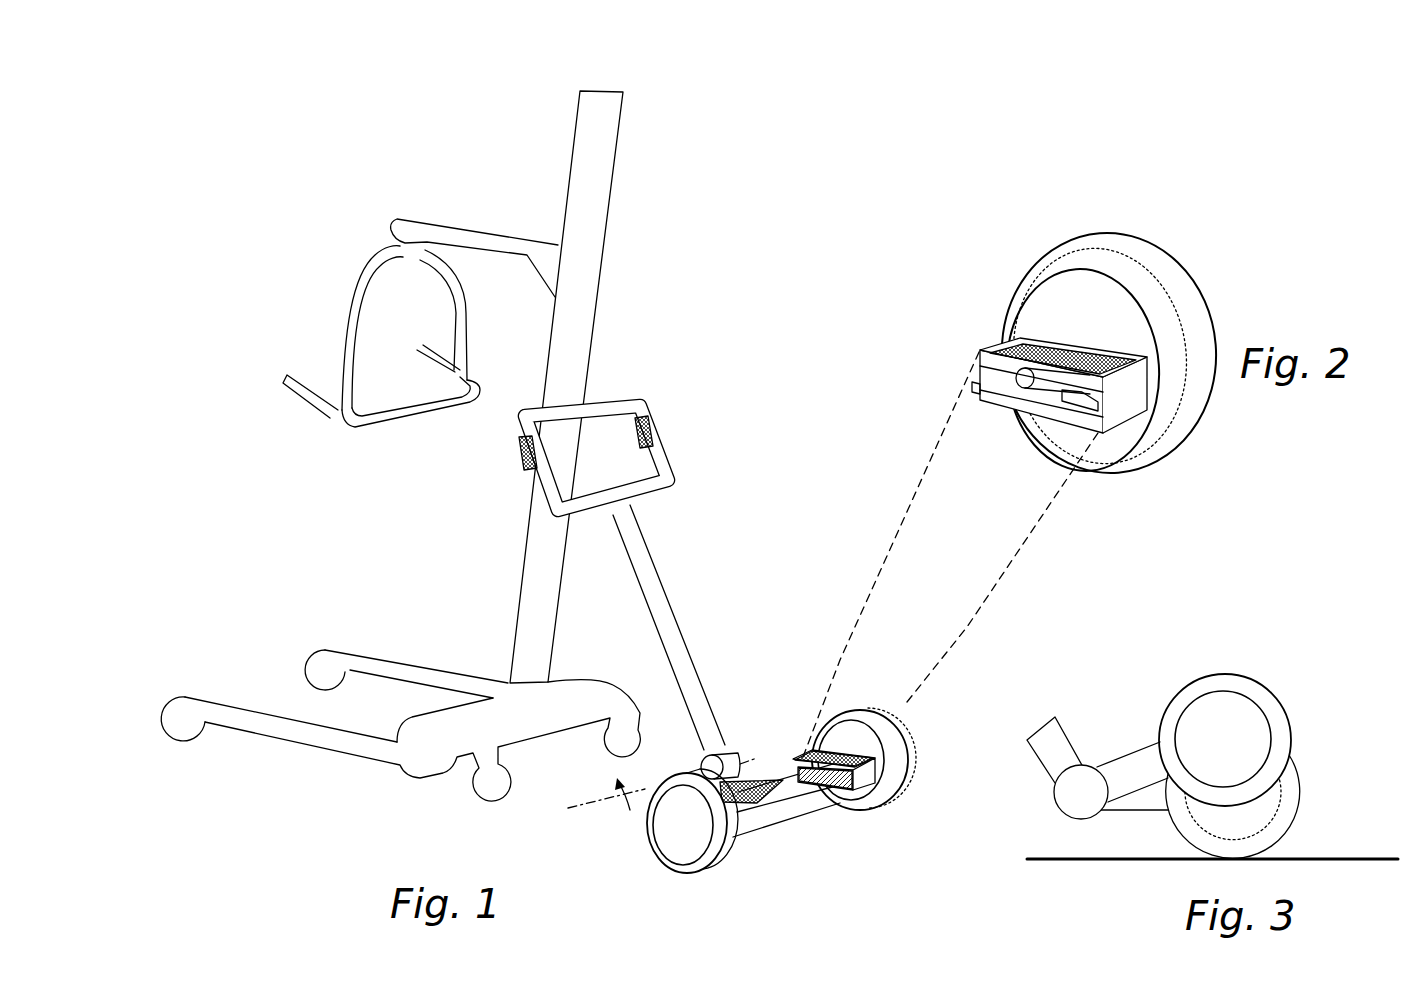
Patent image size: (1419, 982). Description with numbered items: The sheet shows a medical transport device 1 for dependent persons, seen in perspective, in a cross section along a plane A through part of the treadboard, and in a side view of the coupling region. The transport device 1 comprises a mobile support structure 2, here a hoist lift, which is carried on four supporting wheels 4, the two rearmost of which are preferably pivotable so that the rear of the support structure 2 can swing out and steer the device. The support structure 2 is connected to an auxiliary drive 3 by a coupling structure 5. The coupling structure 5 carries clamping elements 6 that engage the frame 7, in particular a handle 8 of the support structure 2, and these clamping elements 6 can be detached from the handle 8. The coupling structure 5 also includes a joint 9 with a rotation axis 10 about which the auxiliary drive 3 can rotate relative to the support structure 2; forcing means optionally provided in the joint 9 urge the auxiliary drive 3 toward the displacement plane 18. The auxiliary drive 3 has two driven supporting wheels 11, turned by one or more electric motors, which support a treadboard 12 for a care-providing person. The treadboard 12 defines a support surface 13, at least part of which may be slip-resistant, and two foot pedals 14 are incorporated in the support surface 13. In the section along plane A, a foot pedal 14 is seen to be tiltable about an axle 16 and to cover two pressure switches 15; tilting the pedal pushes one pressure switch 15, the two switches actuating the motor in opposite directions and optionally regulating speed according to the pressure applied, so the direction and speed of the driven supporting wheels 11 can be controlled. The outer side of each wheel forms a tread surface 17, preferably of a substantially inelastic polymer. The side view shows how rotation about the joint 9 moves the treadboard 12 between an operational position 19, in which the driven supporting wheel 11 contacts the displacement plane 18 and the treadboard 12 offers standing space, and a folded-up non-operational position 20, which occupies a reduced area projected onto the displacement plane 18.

In FIG. 1, the medical transport device 1 is at (767, 262).
In FIG. 1, the mobile support structure 2 is at (318, 292).
In FIG. 1, the auxiliary drive 3 is at (918, 747).
In FIG. 3, the auxiliary drive 3 is at (1218, 652).
In FIG. 1, the supporting wheels 4 is at (172, 722).
In FIG. 1, the coupling structure 5 is at (664, 608).
In FIG. 3, the coupling structure 5 is at (1133, 778).
In FIG. 1, the clamping elements 6 is at (518, 455).
In FIG. 1, the frame 7 is at (592, 269).
In FIG. 1, the handle 8 is at (615, 397).
In FIG. 1, the joint 9 is at (727, 750).
In FIG. 3, the joint 9 is at (1087, 775).
In FIG. 1, the rotation axis 10 is at (647, 783).
In FIG. 3, the rotation axis 10 is at (1075, 793).
In FIG. 2, the driven supporting wheels 11 is at (1118, 316).
In FIG. 3, the driven supporting wheels 11 is at (1220, 720).
In FIG. 1, the treadboard 12 is at (805, 812).
In FIG. 2, the treadboard 12 is at (1128, 388).
In FIG. 1, the support surface 13 is at (770, 775).
In FIG. 2, the support surface 13 is at (986, 340).
In FIG. 2, the foot pedals 14 is at (1058, 352).
In FIG. 2, the pressure switches 15 is at (975, 395).
In FIG. 2, the axle 16 is at (1027, 384).
In FIG. 2, the tread surface 17 is at (1113, 246).
In FIG. 3, the tread surface 17 is at (1248, 685).
In FIG. 3, the displacement plane 18 is at (1335, 857).
In FIG. 3, the operational position 19 is at (1316, 788).
In FIG. 3, the non-operational position 20 is at (1302, 714).
In FIG. 1, the plane A is at (838, 802).